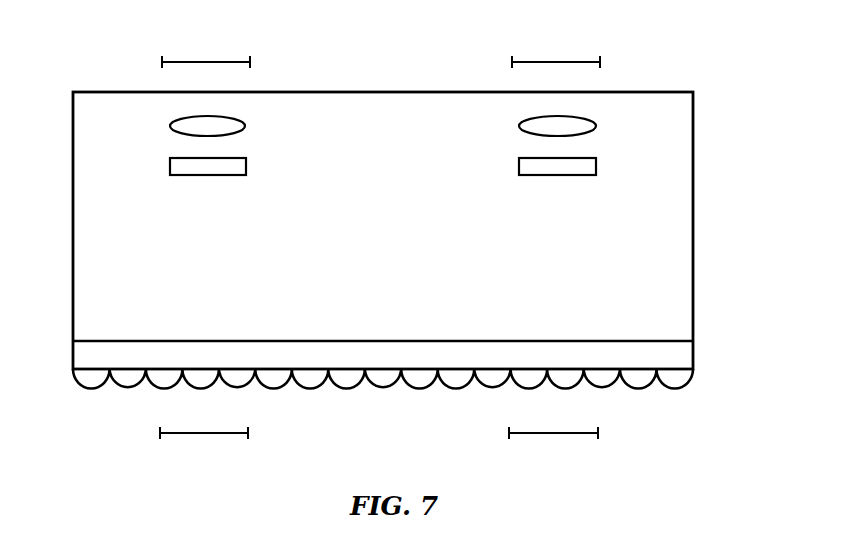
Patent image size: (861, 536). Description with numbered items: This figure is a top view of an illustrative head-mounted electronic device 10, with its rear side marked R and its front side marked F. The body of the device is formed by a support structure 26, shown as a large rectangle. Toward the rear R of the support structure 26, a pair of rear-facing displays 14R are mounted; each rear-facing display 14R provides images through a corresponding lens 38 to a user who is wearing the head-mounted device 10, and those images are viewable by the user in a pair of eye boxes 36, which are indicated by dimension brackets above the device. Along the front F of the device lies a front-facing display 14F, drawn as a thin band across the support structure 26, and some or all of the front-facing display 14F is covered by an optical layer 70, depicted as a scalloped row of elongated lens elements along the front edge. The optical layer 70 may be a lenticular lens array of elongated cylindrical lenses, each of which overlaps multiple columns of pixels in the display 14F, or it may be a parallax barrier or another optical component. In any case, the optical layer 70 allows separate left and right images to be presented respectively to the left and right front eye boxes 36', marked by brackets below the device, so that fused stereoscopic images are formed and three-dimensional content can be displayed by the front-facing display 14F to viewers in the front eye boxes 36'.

The head-mounted device 10 is at (768, 128).
The support structure 26 is at (693, 208).
The front-facing display 14F is at (678, 357).
The rear-facing displays 14R is at (246, 166).
The eye boxes 36 is at (381, 63).
The front eye boxes 36' is at (379, 435).
The lenses 38 is at (245, 126).
The optical layer 70 is at (90, 380).
The rear side R is at (103, 80).
The front side F is at (117, 417).